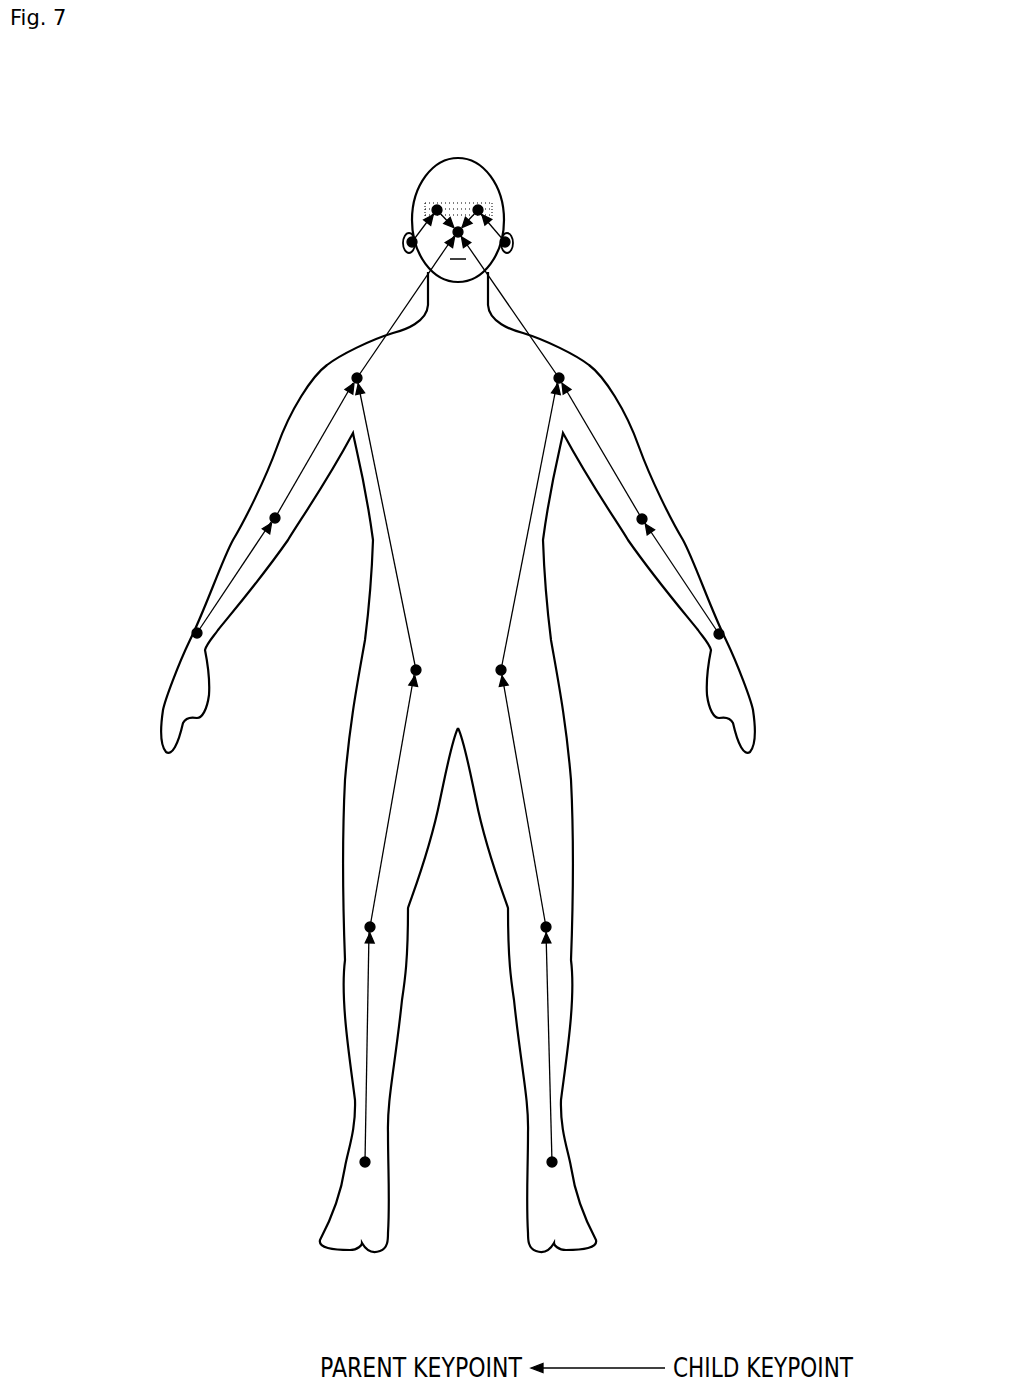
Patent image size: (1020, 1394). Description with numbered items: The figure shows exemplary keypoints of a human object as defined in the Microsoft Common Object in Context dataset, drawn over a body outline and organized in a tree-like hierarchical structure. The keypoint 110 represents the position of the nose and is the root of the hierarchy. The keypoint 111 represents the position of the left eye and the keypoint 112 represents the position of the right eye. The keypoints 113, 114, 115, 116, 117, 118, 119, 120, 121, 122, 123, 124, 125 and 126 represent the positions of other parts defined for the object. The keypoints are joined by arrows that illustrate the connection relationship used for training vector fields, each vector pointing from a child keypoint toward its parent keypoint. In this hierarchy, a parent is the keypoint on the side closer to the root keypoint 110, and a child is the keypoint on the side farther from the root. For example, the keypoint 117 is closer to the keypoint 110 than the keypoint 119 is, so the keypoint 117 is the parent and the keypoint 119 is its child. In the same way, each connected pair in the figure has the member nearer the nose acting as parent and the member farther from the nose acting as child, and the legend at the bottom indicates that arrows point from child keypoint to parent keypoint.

The keypoint 110 is at (459, 228).
The keypoint 111 is at (480, 208).
The keypoint 112 is at (436, 208).
The keypoint 113 is at (508, 242).
The keypoint 114 is at (411, 243).
The keypoint 115 is at (561, 378).
The keypoint 116 is at (356, 378).
The keypoint 117 is at (645, 519).
The keypoint 118 is at (273, 518).
The keypoint 119 is at (721, 634).
The keypoint 120 is at (195, 633).
The keypoint 121 is at (503, 670).
The keypoint 122 is at (414, 670).
The keypoint 123 is at (548, 927).
The keypoint 124 is at (368, 927).
The keypoint 125 is at (555, 1162).
The keypoint 126 is at (363, 1162).